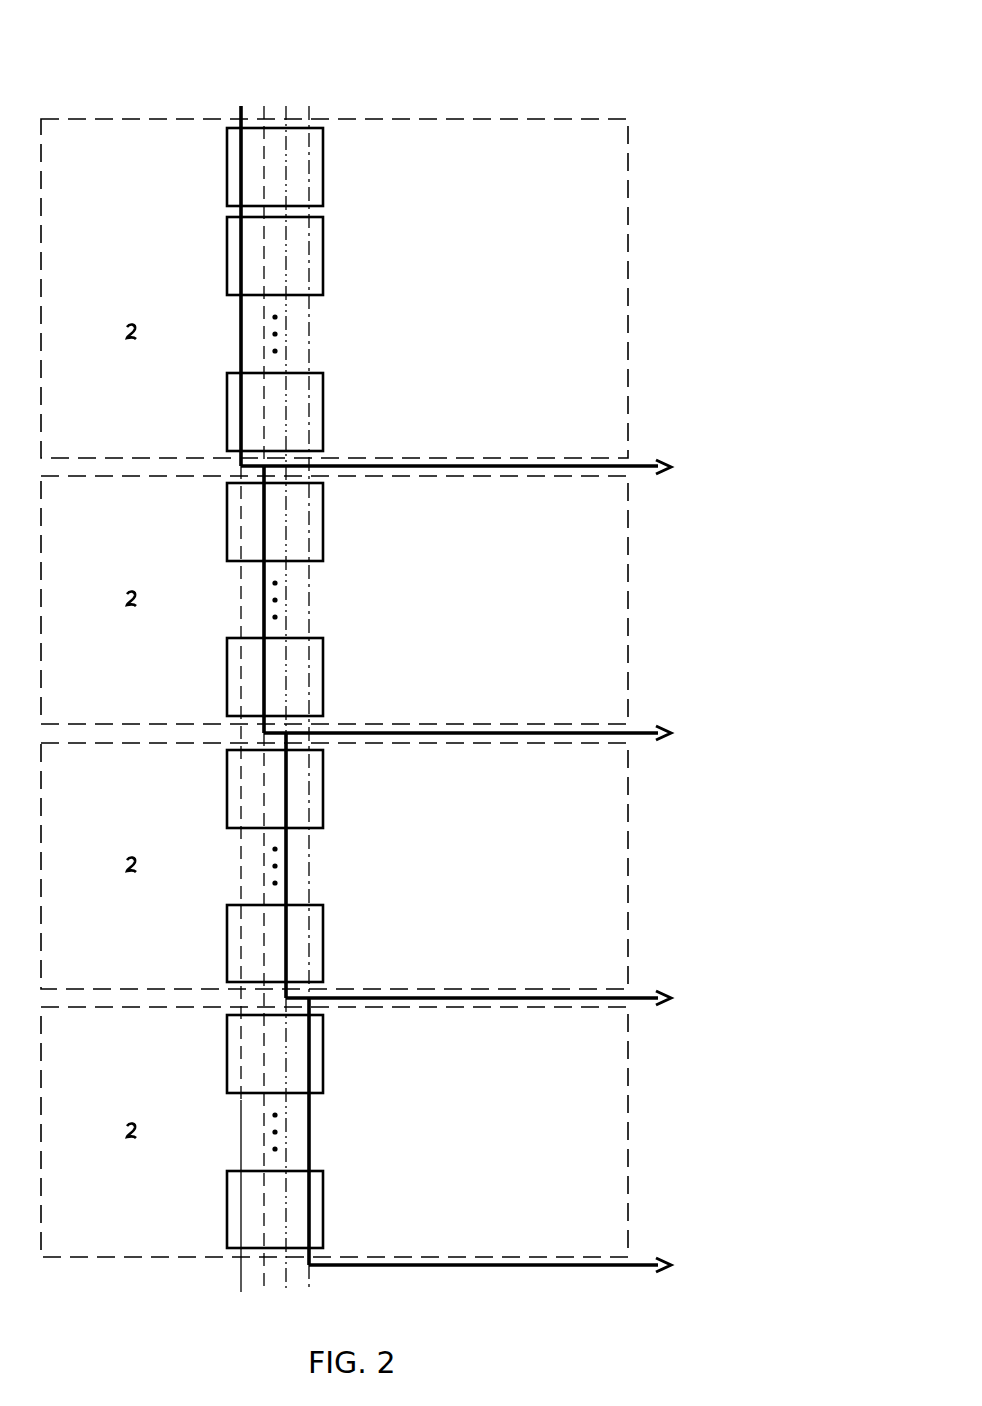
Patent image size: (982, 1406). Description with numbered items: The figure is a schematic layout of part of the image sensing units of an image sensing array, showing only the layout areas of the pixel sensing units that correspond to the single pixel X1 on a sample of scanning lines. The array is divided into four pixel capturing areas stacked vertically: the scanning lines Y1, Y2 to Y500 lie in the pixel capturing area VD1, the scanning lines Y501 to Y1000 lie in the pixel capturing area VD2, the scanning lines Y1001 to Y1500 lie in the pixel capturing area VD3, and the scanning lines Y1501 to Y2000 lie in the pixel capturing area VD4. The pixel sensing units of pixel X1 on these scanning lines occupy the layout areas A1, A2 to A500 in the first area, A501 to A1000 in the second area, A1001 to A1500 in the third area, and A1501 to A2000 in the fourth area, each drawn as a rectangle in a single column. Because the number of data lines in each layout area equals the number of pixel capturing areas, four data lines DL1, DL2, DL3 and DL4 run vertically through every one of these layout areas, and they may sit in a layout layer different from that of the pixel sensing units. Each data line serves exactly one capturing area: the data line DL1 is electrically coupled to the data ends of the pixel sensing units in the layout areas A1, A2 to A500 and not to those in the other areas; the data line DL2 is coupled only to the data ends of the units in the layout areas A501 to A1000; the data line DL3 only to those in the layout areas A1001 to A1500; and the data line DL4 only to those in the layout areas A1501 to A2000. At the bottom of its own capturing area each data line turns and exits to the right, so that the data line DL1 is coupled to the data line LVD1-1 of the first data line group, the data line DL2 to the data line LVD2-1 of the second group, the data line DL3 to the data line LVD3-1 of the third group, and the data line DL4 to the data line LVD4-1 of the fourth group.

The data line DL1 is at (240, 92).
The data line DL2 is at (264, 92).
The data line DL3 is at (287, 92).
The data line DL4 is at (310, 92).
The pixel X1 is at (363, 93).
The scanning line Y1 is at (249, 167).
The scanning line Y2 is at (249, 256).
The scanning line Y500 is at (249, 412).
The scanning line Y501 is at (249, 522).
The scanning line Y1000 is at (249, 677).
The scanning line Y1001 is at (249, 789).
The scanning line Y1500 is at (249, 943).
The scanning line Y1501 is at (249, 1054).
The scanning line Y2000 is at (249, 1209).
The layout area A1 is at (323, 167).
The layout area A2 is at (323, 256).
The layout area A500 is at (323, 412).
The layout area A501 is at (323, 522).
The layout area A1000 is at (323, 677).
The layout area A1001 is at (323, 789).
The layout area A1500 is at (323, 944).
The layout area A1501 is at (323, 1054).
The layout area A2000 is at (323, 1210).
The pixel capturing area VD1 is at (628, 290).
The pixel capturing area VD2 is at (628, 600).
The pixel capturing area VD3 is at (628, 866).
The pixel capturing area VD4 is at (628, 1132).
The data line LVD1-1 is at (500, 467).
The data line LVD2-1 is at (512, 733).
The data line LVD3-1 is at (523, 998).
The data line LVD4-1 is at (534, 1265).